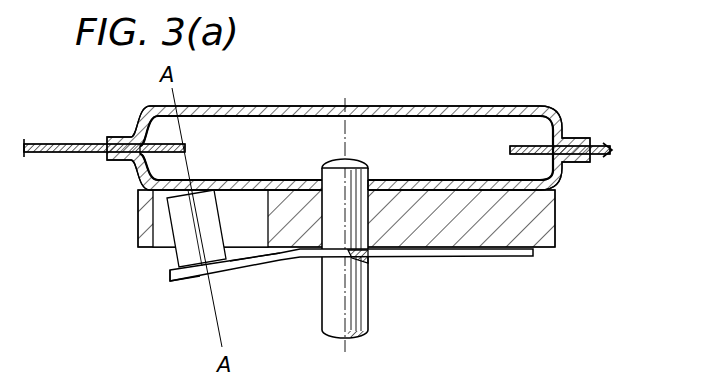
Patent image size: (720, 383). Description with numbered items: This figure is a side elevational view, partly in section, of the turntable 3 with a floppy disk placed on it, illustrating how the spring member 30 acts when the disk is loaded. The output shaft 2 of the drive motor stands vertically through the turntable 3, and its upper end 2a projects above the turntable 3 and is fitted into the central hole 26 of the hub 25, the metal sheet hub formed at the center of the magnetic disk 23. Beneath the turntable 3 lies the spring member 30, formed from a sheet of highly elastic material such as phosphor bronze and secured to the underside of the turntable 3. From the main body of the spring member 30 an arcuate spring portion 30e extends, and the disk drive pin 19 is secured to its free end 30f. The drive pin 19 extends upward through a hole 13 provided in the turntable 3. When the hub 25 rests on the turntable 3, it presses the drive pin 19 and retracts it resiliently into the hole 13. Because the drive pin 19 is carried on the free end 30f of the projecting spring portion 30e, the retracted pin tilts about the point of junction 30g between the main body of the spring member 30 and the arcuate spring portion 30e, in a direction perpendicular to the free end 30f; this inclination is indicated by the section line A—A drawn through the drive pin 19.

The output shaft 2 is at (368, 318).
The upper end of the output shaft 2a is at (330, 158).
The turntable 3 is at (557, 213).
The hole in the turntable 13 is at (247, 178).
The disk drive pin 19 is at (178, 230).
The magnetic disk 23 is at (597, 144).
The hub 25 is at (493, 107).
The central hole 26 is at (378, 180).
The spring member 30 is at (485, 258).
The arcuate spring portion 30e is at (242, 270).
The free end of the spring portion 30f is at (193, 273).
The point of junction 30g is at (368, 262).